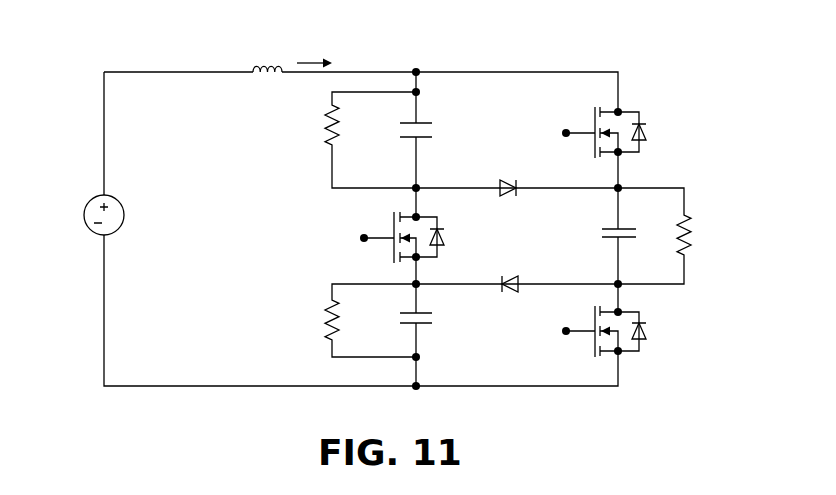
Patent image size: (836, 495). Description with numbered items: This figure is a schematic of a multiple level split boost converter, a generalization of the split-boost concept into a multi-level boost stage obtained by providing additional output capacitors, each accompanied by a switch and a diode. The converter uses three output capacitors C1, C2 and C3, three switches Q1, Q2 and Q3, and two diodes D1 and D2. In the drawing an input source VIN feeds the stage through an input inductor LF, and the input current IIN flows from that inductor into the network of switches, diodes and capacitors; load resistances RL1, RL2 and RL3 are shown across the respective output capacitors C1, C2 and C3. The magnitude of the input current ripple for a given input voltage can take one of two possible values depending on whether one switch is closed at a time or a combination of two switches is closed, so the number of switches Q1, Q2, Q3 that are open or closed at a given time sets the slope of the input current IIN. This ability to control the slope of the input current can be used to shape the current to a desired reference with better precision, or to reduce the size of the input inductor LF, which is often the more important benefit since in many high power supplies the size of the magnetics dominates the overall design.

The input voltage source VIN is at (78, 215).
The filter inductor LF is at (267, 49).
The input current IIN is at (314, 46).
The load resistor 1 RL1 is at (348, 140).
The output capacitor C1 is at (399, 129).
The diode D1 is at (517, 169).
The diode D2 is at (517, 267).
The switch Q1 is at (399, 232).
The switch Q2 is at (600, 128).
The switch Q3 is at (601, 326).
The output capacitor C2 is at (601, 231).
The load resistor 2 RL2 is at (677, 236).
The load resistor 3 RL3 is at (346, 320).
The output capacitor C3 is at (399, 318).